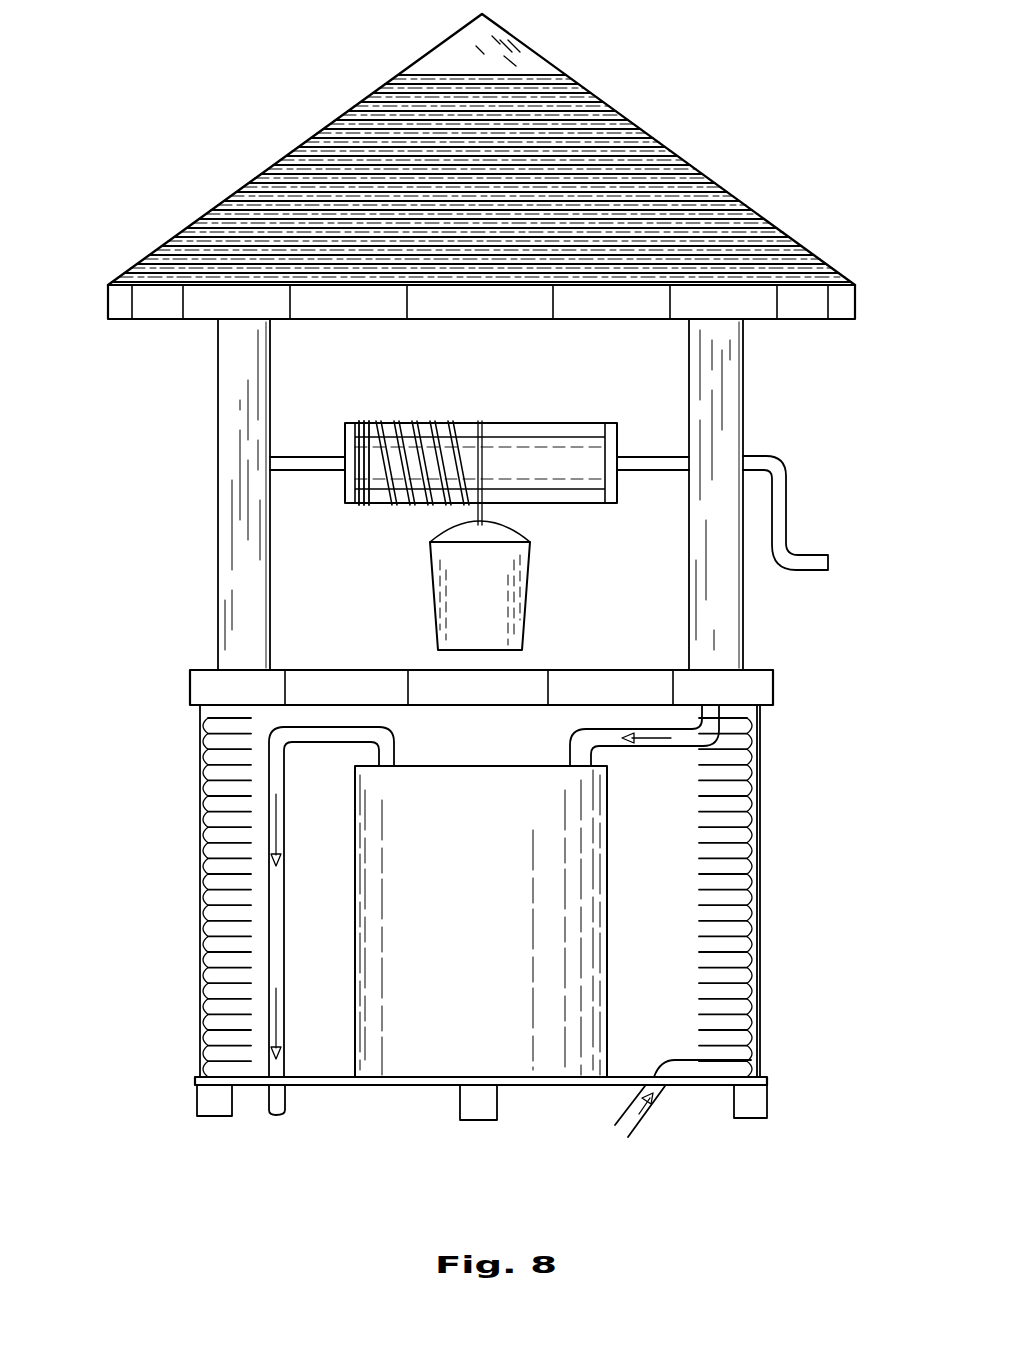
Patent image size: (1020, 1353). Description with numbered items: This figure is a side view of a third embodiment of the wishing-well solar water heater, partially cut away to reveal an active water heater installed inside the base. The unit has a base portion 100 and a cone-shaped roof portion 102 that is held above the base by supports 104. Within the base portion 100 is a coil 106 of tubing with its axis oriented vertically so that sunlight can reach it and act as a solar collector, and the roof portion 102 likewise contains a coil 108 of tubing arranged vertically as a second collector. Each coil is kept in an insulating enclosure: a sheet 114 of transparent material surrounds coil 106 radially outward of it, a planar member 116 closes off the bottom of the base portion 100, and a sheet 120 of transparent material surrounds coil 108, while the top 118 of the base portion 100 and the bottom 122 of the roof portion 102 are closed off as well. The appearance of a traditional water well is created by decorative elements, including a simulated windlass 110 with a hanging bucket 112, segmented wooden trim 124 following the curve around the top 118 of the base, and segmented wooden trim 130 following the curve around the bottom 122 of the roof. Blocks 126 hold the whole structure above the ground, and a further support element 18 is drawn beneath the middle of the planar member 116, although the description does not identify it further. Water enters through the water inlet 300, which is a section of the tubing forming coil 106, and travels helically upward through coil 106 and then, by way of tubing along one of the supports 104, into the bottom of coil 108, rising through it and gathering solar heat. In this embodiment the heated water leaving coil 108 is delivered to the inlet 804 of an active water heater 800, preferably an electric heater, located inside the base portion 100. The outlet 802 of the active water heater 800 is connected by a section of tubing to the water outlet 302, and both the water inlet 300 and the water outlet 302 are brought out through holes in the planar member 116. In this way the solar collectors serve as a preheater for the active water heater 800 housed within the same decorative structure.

The support foot 18 is at (474, 1103).
The base portion 100 is at (186, 880).
The roof portion 102 is at (320, 90).
The supports 104 is at (232, 375).
The coil 106 is at (740, 852).
The coil 108 is at (676, 178).
The windlass 110 is at (662, 468).
The bucket 112 is at (508, 582).
The sheet of transparent material 114 is at (200, 768).
The planar member 116 is at (766, 1081).
The top of base portion 118 is at (538, 657).
The sheet of transparent material 120 is at (536, 52).
The bottom of roof portion 122 is at (575, 335).
The wooden trim 124 is at (300, 680).
The blocks 126 is at (749, 1105).
The wooden trim 130 is at (430, 302).
The water inlet 300 is at (648, 1118).
The water outlet 302 is at (282, 1097).
The active water heater 800 is at (520, 945).
The outlet 802 is at (400, 760).
The inlet 804 is at (568, 762).